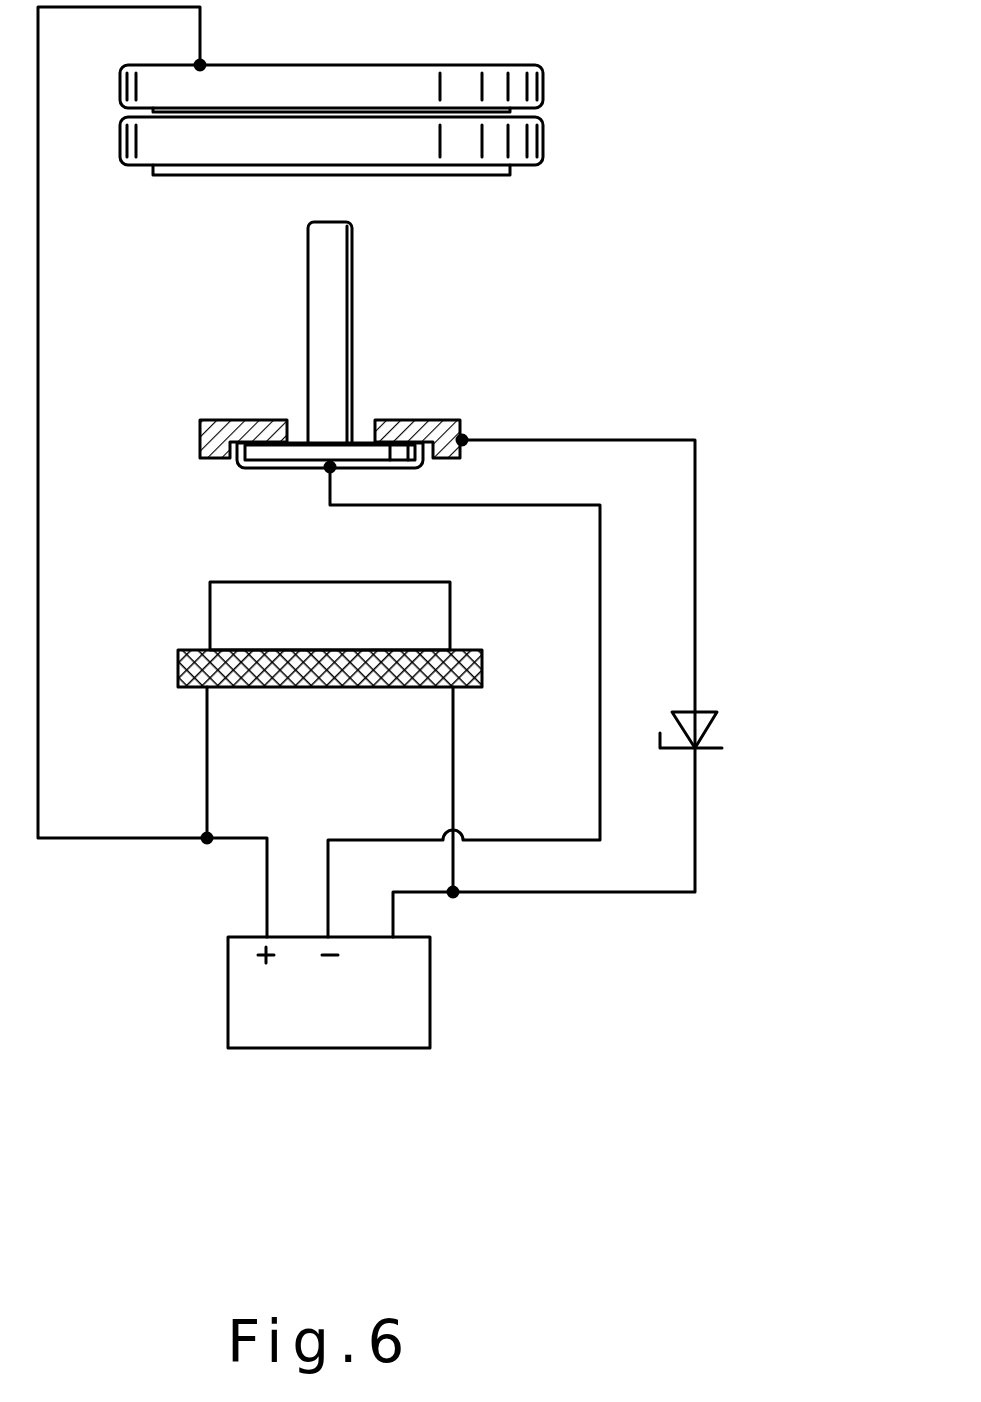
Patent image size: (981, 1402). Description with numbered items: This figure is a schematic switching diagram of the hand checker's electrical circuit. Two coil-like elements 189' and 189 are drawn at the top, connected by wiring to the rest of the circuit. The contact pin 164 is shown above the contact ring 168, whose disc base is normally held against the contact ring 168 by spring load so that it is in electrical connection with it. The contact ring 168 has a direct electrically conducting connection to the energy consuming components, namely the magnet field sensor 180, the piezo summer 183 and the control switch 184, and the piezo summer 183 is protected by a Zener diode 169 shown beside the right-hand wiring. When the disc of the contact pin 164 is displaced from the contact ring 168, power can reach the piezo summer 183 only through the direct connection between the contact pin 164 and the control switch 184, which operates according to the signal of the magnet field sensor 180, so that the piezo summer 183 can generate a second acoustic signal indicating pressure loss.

The second coil 189' is at (410, 73).
The coil 189 is at (407, 151).
The contact pin 164 is at (327, 243).
The contact ring 168 is at (410, 420).
The piezo summer 183 is at (277, 600).
The control switch 184 is at (178, 665).
The zener diode 169 is at (707, 732).
The magnet field sensor 180 is at (255, 1023).